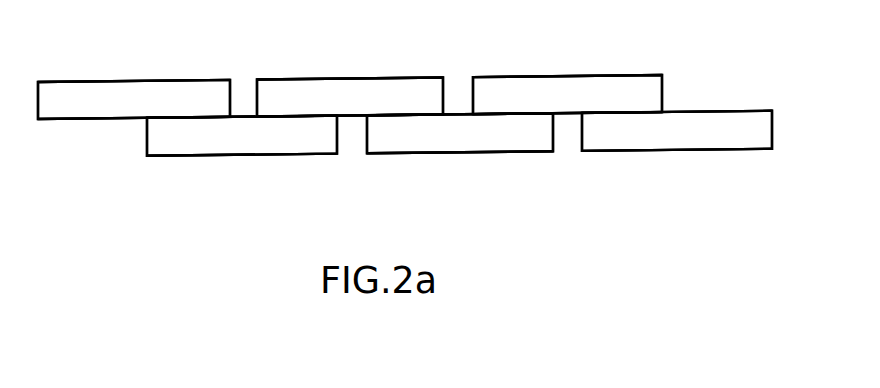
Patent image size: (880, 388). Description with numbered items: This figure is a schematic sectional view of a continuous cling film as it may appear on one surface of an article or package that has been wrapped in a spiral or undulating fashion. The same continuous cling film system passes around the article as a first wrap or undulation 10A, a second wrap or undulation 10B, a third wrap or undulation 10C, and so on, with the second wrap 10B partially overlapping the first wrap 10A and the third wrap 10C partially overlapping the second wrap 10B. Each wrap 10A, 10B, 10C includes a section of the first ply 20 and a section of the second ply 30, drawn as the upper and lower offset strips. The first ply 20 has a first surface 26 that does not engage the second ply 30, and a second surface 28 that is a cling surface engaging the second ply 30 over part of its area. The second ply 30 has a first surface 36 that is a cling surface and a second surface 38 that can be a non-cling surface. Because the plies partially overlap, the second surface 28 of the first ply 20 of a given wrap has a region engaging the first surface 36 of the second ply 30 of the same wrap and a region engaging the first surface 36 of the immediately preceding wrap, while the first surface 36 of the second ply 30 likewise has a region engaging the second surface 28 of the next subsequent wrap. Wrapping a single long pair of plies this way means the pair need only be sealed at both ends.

The first wrap or undulation 10A is at (235, 102).
The second wrap or undulation 10B is at (453, 100).
The third wrap or undulation 10C is at (670, 98).
The first ply 20 is at (133, 97).
The first surface of the first ply 26 is at (92, 80).
The second surface of the first ply 28 is at (80, 120).
The second ply 30 is at (247, 140).
The first surface of the second ply 36 is at (247, 117).
The second surface of the second ply 38 is at (197, 157).